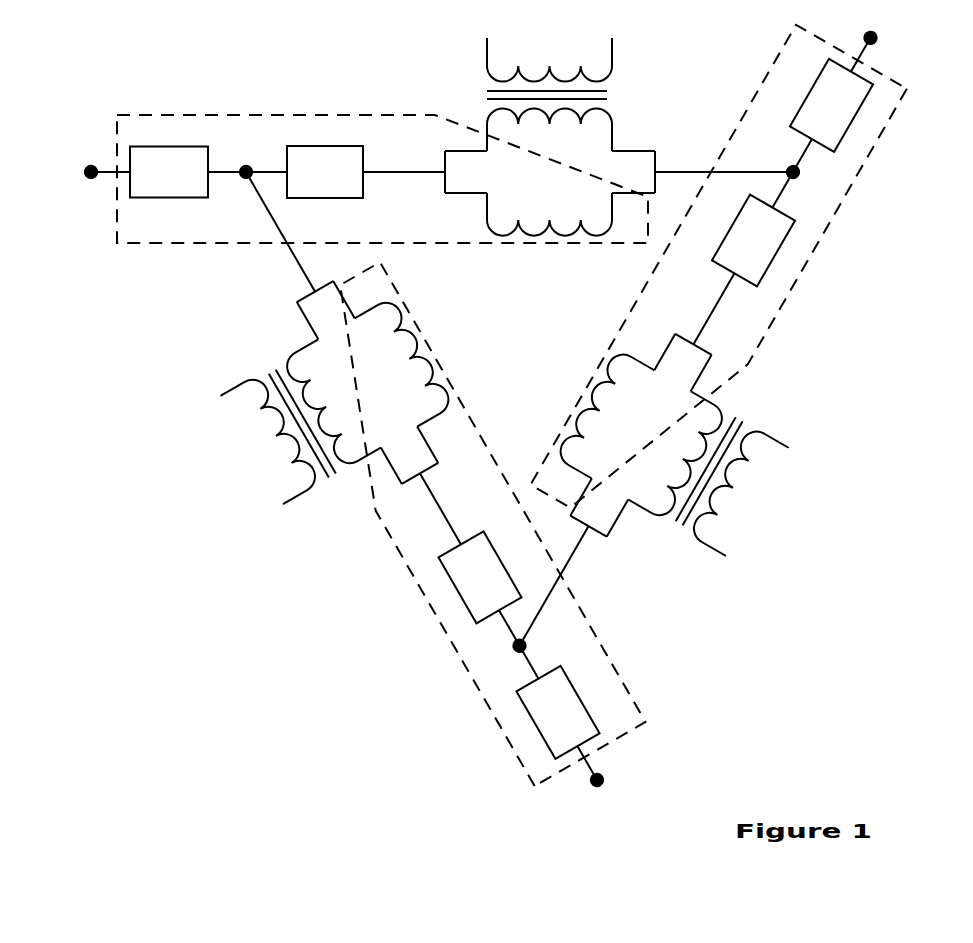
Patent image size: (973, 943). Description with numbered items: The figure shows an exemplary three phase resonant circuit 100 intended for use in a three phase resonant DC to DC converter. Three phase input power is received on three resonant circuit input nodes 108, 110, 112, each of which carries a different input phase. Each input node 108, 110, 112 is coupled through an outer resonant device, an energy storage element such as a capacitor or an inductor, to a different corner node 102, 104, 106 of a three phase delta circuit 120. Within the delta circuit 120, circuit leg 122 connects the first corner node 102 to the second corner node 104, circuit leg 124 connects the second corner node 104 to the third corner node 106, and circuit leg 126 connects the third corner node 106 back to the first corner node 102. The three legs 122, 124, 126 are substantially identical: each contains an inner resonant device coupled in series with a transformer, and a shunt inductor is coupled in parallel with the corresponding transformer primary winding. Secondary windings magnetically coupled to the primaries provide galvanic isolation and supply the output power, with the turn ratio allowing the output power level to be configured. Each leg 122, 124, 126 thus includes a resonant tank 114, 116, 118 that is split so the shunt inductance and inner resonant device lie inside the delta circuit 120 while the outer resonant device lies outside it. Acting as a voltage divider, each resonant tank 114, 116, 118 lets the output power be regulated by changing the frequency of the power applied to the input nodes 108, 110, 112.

The three phase resonant circuit 100 is at (506, 409).
The first corner node 102 is at (226, 114).
The second corner node 104 is at (748, 132).
The third corner node 106 is at (587, 631).
The resonant circuit input node 108 is at (68, 120).
The resonant circuit input node 110 is at (917, 73).
The resonant circuit input node 112 is at (659, 763).
The resonant tank 114 is at (382, 157).
The resonant tank 116 is at (719, 287).
The resonant tank 118 is at (457, 524).
The three phase delta circuit 120 is at (506, 409).
The circuit leg 122 is at (550, 164).
The circuit leg 124 is at (674, 447).
The circuit leg 126 is at (366, 402).